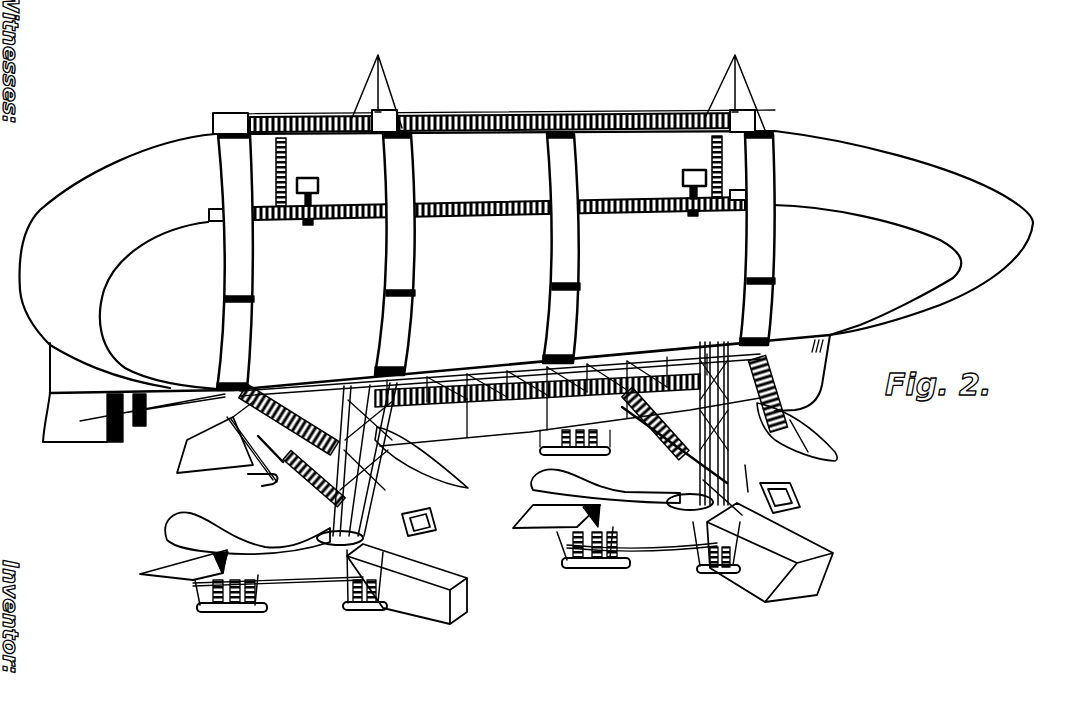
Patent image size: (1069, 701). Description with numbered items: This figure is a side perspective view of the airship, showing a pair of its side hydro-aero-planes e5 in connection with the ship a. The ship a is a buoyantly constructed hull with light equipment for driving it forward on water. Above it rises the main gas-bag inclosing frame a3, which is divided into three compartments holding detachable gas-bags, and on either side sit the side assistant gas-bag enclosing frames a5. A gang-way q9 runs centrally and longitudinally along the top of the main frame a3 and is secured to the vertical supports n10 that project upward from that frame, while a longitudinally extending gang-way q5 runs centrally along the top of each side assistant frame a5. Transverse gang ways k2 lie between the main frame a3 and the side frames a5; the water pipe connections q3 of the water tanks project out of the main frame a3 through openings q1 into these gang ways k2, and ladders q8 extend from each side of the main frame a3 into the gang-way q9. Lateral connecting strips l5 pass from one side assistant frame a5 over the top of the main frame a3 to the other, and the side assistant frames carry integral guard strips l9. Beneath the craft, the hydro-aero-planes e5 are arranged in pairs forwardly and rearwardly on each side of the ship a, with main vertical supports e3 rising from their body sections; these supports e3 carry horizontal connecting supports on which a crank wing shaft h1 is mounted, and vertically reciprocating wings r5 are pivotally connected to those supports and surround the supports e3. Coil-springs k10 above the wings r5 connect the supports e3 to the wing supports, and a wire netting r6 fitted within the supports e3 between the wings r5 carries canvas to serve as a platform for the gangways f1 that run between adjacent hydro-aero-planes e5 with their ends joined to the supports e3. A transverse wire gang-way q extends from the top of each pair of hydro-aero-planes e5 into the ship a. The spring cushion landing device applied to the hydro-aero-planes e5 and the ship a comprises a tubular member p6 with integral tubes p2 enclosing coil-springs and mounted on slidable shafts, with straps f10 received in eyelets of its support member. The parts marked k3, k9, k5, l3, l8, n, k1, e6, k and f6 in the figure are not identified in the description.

The ship a is at (526, 271).
The main gas-bag inclosing frame a3 is at (304, 275).
The side assistant gas-bag enclosing frame a5 is at (715, 270).
The keel bottom k3 is at (140, 425).
The keel post k9 is at (100, 444).
The keel post k5 is at (135, 430).
The gang-way q9 is at (553, 114).
The vertical supports n10 is at (624, 114).
The longitudinally extending gang-way q5 is at (477, 216).
The ring bracket l3 is at (210, 213).
The lateral connecting strips l5 is at (256, 280).
The integral guard strips l9 is at (253, 332).
The ring cap and mast l8 is at (245, 114).
The ladders q8 is at (288, 163).
The openings q1 is at (319, 184).
The water pipe connections q3 is at (312, 200).
The transverse gang ways k2 is at (308, 225).
The gangways f1 is at (478, 408).
The transverse wire gang-way q is at (288, 420).
The propeller shaft tower n is at (360, 524).
The coil-springs k10 is at (768, 388).
The wire netting r6 is at (800, 442).
The vertically reciprocating wings r5 is at (446, 465).
The strut rod k1 is at (662, 432).
The crank wing shaft h1 is at (757, 478).
The rod e6 is at (718, 490).
The main vertical supports e3 is at (601, 509).
The fin k is at (290, 513).
The straps f10 is at (556, 544).
The bar f6 is at (340, 600).
The integral tubes p2 is at (262, 602).
The tubular member p6 is at (236, 612).
The hydro-aero-planes e5 is at (433, 546).